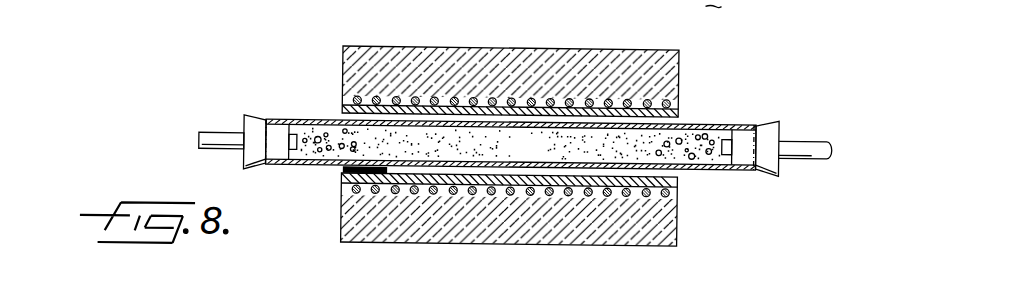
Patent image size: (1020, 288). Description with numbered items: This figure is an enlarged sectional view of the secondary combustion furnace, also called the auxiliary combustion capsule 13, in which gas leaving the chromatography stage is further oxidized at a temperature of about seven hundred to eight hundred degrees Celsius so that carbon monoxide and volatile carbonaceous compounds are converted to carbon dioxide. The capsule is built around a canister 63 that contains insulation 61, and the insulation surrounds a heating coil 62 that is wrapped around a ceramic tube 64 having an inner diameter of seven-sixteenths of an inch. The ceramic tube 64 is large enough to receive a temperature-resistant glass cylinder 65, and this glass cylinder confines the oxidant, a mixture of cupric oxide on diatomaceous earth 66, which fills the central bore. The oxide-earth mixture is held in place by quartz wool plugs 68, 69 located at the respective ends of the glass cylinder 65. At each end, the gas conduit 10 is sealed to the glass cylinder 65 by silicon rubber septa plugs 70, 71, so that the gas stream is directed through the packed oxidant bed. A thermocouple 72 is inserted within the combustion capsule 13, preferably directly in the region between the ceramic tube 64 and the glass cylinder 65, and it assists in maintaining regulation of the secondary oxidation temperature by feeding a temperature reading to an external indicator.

The conduit 10 is at (828, 154).
The secondary combustion furnace 13 is at (685, 227).
The insulation 61 is at (575, 82).
The heating coil 62 is at (632, 95).
The canister 63 is at (460, 53).
The ceramic tube 64 is at (680, 180).
The temperature-resistant glass cylinder 65 is at (277, 120).
The cupric oxide diatomaceous earth 66 is at (540, 151).
The quartz wool plug 68 is at (708, 131).
The quartz wool plug 69 is at (325, 131).
The silicon rubber septa plug 70 is at (781, 122).
The silicon rubber septa plug 71 is at (243, 123).
The thermocouple 72 is at (343, 173).